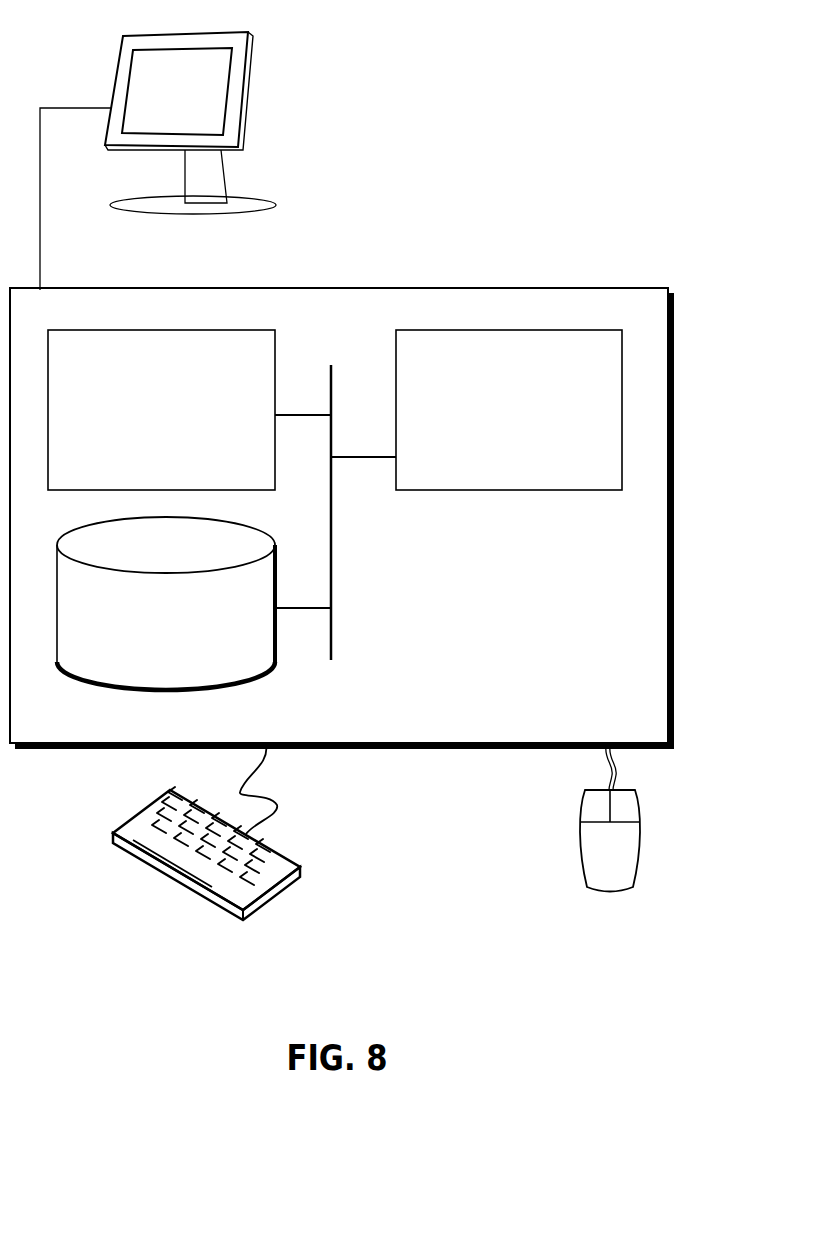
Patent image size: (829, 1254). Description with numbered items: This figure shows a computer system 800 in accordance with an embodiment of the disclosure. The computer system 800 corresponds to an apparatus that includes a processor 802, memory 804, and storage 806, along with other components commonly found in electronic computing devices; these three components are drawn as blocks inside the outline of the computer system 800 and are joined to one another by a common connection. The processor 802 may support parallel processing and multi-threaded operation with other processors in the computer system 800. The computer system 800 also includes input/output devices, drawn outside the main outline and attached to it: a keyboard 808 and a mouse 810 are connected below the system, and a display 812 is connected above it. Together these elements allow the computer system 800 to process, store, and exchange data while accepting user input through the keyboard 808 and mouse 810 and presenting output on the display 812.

The computer system 800 is at (385, 267).
The processor 802 is at (491, 423).
The memory 804 is at (141, 422).
The storage 806 is at (147, 634).
The keyboard 808 is at (132, 855).
The mouse 810 is at (590, 864).
The display 812 is at (158, 161).